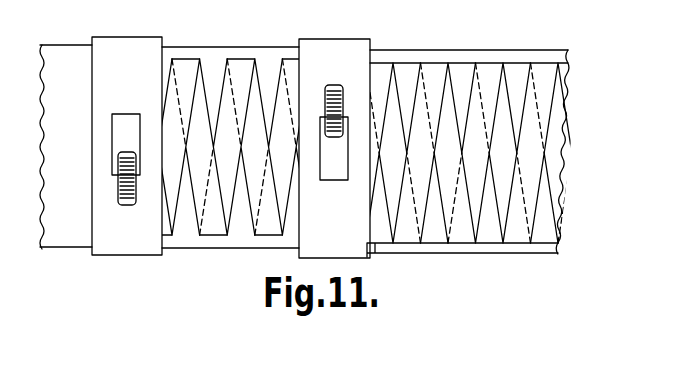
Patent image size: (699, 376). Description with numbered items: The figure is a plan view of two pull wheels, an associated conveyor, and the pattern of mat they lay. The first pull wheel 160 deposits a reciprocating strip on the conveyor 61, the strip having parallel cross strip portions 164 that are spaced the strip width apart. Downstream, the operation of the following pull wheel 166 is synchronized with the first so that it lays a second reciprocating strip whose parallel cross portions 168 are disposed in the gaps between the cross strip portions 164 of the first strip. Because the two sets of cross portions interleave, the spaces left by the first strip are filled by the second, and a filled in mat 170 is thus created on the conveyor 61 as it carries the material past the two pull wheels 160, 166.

The conveyor 61 is at (62, 248).
The first pull wheel 160 is at (124, 205).
The cross strip portions 164 is at (389, 149).
The following pull wheel 166 is at (337, 85).
The parallel cross portions 168 is at (383, 50).
The filled in mat 170 is at (530, 151).